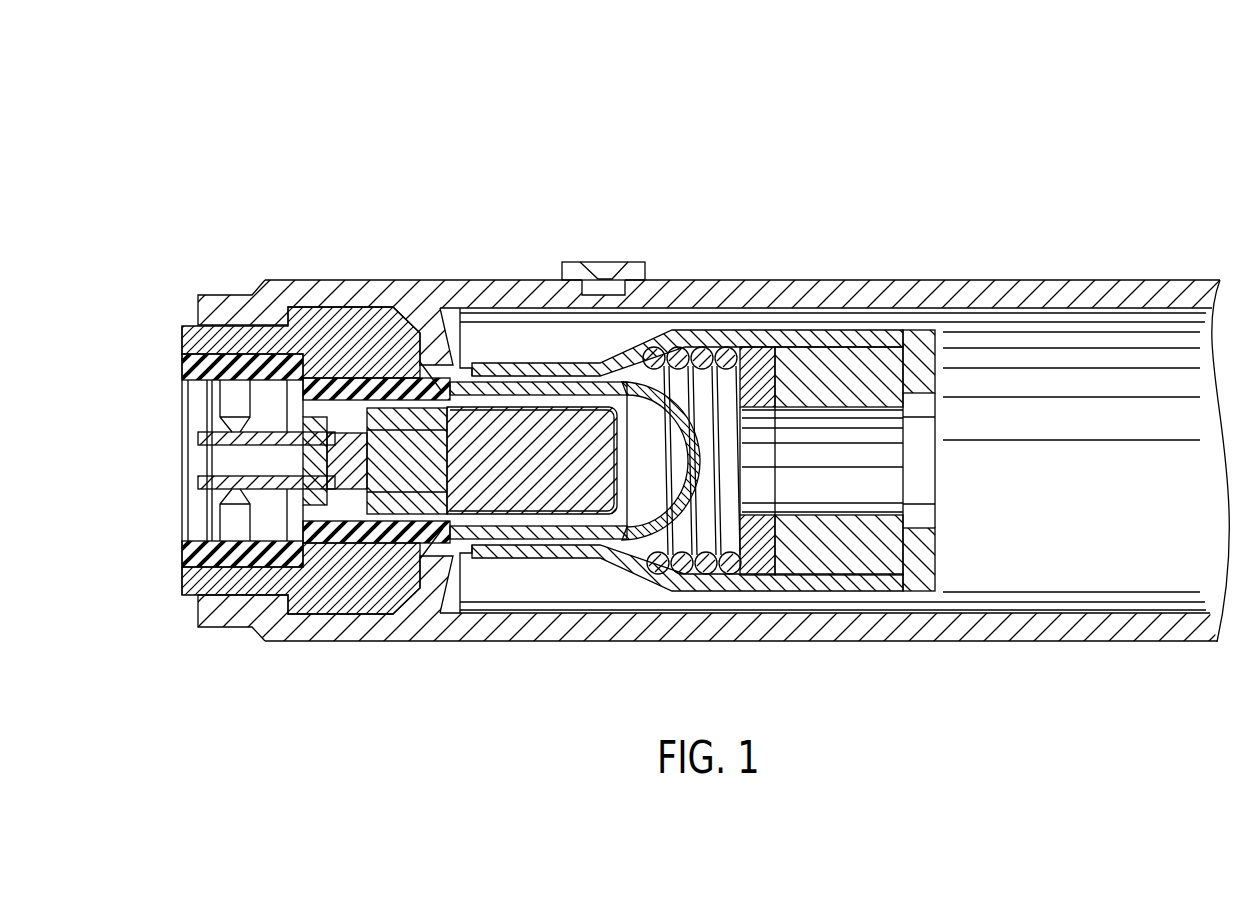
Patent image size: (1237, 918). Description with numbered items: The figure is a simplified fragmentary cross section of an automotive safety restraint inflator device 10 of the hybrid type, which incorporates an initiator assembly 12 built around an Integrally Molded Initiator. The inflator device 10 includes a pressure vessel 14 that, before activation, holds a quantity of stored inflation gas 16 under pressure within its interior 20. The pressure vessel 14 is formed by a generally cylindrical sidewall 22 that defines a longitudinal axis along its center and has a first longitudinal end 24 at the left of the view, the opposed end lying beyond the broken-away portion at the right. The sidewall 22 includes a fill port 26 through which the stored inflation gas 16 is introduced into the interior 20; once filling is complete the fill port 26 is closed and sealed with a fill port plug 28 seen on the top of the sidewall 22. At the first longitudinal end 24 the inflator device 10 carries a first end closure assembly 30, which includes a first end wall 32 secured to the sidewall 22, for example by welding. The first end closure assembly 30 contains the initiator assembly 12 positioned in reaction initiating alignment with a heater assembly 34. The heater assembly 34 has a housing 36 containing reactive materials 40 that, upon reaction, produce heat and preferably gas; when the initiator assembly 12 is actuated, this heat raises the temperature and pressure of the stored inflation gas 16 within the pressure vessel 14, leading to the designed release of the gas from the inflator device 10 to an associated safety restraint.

The automotive safety restraint inflator device 10 is at (997, 145).
The initiator assembly 12 is at (518, 483).
The pressure vessel 14 is at (1115, 279).
The stored inflation gas 16 is at (1095, 550).
The interior 20 is at (1030, 424).
The sidewall 22 is at (890, 644).
The first longitudinal end 24 is at (432, 217).
The fill port 26 is at (648, 290).
The fill port plug 28 is at (577, 262).
The first end closure assembly 30 is at (292, 686).
The first end wall 32 is at (385, 632).
The heater assembly 34 is at (820, 341).
The housing 36 is at (754, 585).
The reactive materials 40 is at (838, 547).